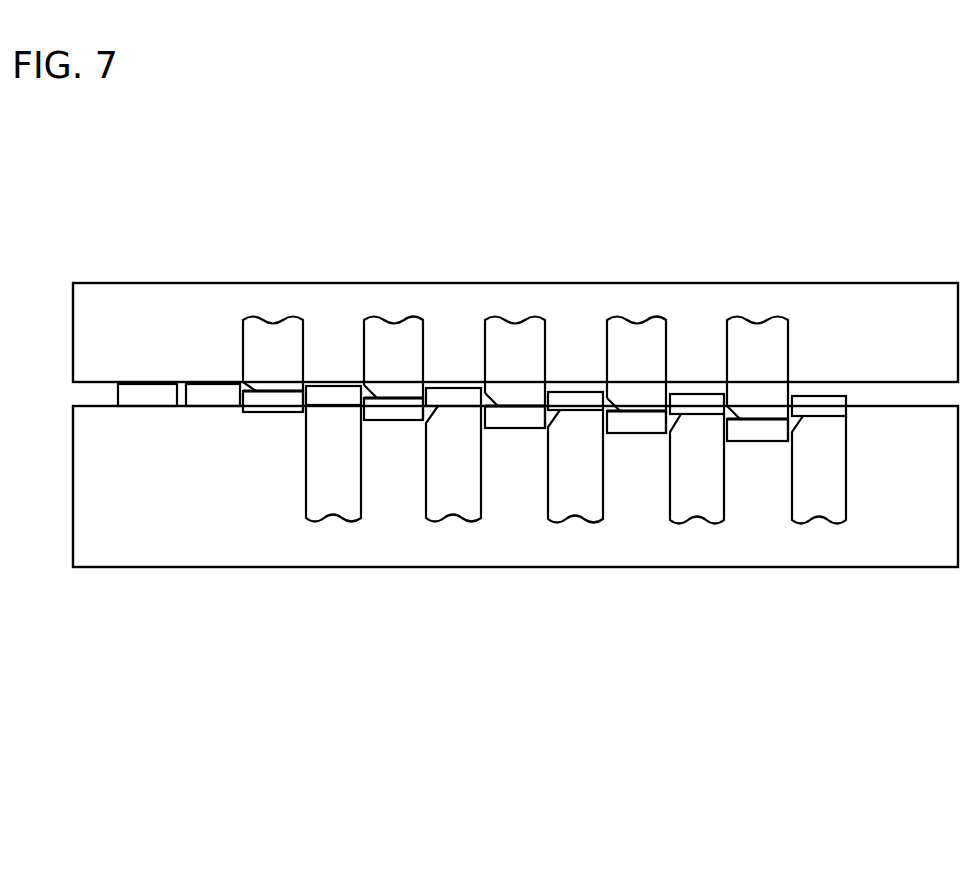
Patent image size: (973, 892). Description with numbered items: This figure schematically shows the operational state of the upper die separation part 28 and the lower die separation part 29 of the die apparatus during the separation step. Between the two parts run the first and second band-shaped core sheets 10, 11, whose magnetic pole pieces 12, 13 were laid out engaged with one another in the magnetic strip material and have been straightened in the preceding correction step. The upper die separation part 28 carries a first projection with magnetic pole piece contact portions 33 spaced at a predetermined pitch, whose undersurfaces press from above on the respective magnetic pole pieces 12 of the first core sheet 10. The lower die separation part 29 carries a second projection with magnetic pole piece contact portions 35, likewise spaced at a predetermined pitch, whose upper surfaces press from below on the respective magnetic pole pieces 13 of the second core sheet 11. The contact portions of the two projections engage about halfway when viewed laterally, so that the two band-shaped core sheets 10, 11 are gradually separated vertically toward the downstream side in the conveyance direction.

The first band-shaped core sheet 10 is at (150, 380).
The second band-shaped core sheet 11 is at (212, 380).
The magnetic pole piece 12 is at (254, 400).
The magnetic pole piece 13 is at (316, 399).
The upper die separation part 28 is at (827, 283).
The lower die separation part 29 is at (795, 568).
The magnetic pole piece contact portion 33 is at (383, 330).
The magnetic pole piece contact portion 35 is at (578, 505).